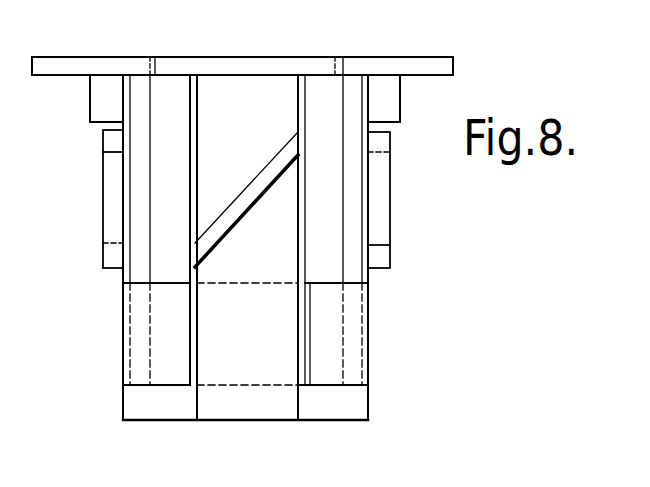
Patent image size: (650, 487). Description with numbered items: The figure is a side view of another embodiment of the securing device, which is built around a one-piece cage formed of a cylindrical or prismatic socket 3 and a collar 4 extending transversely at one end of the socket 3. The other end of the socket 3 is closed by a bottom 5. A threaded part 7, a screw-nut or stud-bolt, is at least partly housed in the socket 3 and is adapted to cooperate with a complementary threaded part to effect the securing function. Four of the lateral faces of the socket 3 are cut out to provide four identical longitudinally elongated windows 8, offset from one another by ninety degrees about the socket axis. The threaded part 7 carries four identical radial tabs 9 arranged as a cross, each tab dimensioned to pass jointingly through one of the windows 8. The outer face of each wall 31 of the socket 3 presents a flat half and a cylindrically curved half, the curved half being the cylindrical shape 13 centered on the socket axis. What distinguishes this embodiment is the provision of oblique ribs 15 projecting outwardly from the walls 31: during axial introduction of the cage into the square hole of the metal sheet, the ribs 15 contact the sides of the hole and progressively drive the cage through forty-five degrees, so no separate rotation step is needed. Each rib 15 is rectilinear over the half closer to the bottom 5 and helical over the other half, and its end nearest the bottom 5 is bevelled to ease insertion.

The socket 3 is at (120, 217).
The wall of the socket 31 is at (262, 88).
The collar 4 is at (418, 65).
The bottom 5 is at (338, 405).
The threaded part 7 is at (369, 303).
The longitudinally elongated windows 8 is at (210, 168).
The radial tabs 9 is at (350, 355).
The cylindrical shape 13 is at (103, 93).
The oblique ribs 15 is at (275, 168).